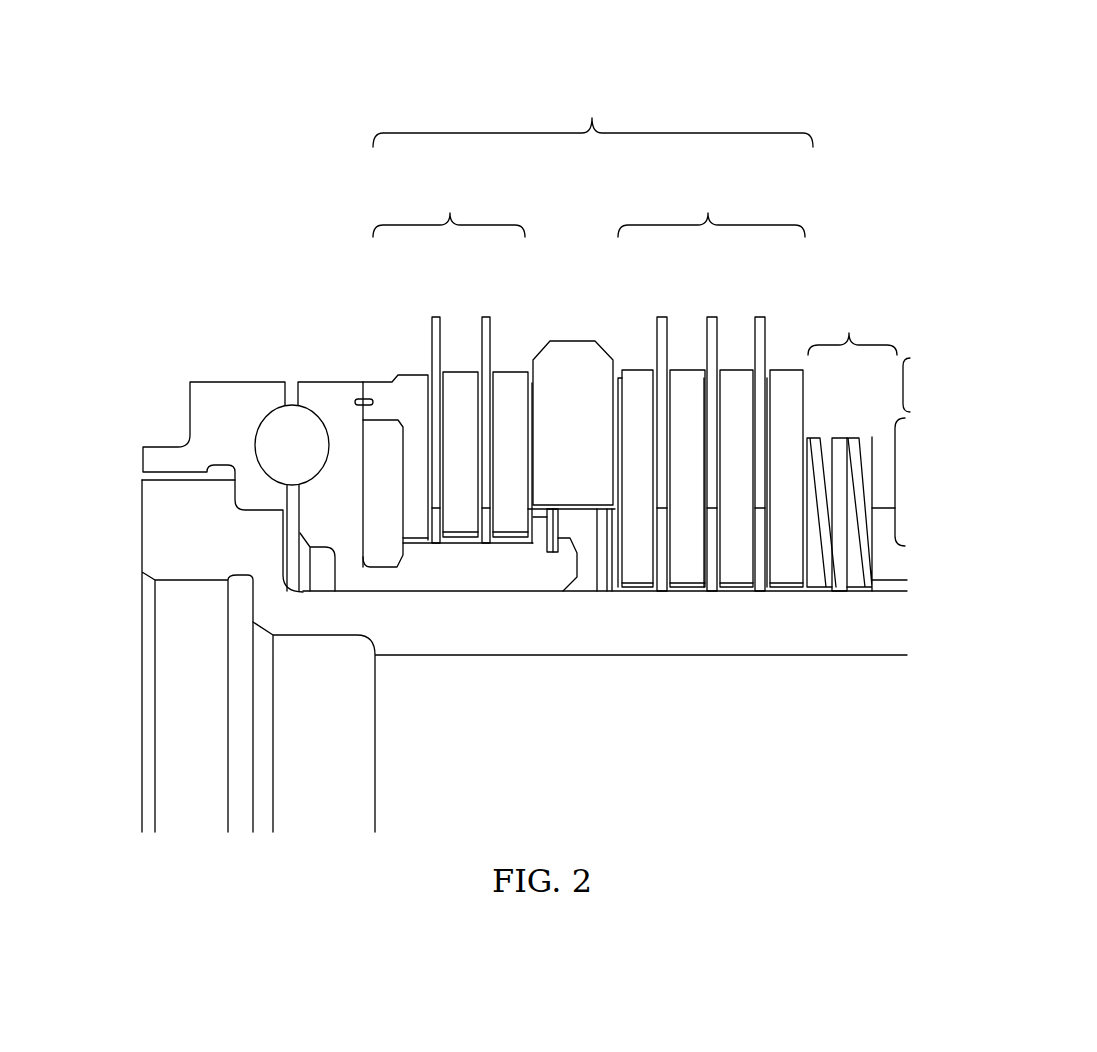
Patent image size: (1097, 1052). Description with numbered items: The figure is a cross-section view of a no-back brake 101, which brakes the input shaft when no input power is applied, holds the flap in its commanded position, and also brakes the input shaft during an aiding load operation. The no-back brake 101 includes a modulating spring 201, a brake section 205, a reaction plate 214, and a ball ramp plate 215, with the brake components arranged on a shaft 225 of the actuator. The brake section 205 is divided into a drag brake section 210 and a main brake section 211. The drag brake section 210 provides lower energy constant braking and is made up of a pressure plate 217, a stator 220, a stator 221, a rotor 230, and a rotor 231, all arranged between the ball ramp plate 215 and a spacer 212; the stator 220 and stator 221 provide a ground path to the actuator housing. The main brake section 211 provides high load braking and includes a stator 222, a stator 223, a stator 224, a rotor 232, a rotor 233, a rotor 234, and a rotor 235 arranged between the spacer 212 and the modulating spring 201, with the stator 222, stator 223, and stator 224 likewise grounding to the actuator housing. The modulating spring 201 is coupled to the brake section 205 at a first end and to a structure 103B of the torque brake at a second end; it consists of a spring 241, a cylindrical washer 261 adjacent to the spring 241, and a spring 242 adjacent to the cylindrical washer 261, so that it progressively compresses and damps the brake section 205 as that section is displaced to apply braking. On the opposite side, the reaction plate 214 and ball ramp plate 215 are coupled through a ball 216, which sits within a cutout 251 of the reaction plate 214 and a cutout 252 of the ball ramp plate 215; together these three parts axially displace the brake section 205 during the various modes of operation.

The no-back brake 101 is at (978, 79).
The structure of torque brake 103B is at (898, 557).
The modulating spring 201 is at (852, 324).
The brake section 205 is at (593, 114).
The drag brake section 210 is at (449, 207).
The main brake section 211 is at (711, 207).
The spacer 212 is at (575, 345).
The reaction plate 214 is at (225, 390).
The ball ramp plate 215 is at (333, 387).
The ball 216 is at (290, 417).
The pressure plate 217 is at (403, 385).
The stator 220 is at (436, 317).
The stator 221 is at (486, 317).
The stator 222 is at (662, 317).
The stator 223 is at (712, 317).
The stator 224 is at (760, 317).
The shaft 225 is at (147, 535).
The rotor 230 is at (460, 380).
The rotor 231 is at (515, 380).
The rotor 232 is at (637, 378).
The rotor 233 is at (688, 378).
The rotor 234 is at (738, 378).
The rotor 235 is at (788, 372).
The spring 241 is at (823, 580).
The spring 242 is at (872, 578).
The cutout 251 is at (259, 423).
The cutout 252 is at (325, 472).
The cylindrical washer 261 is at (842, 578).